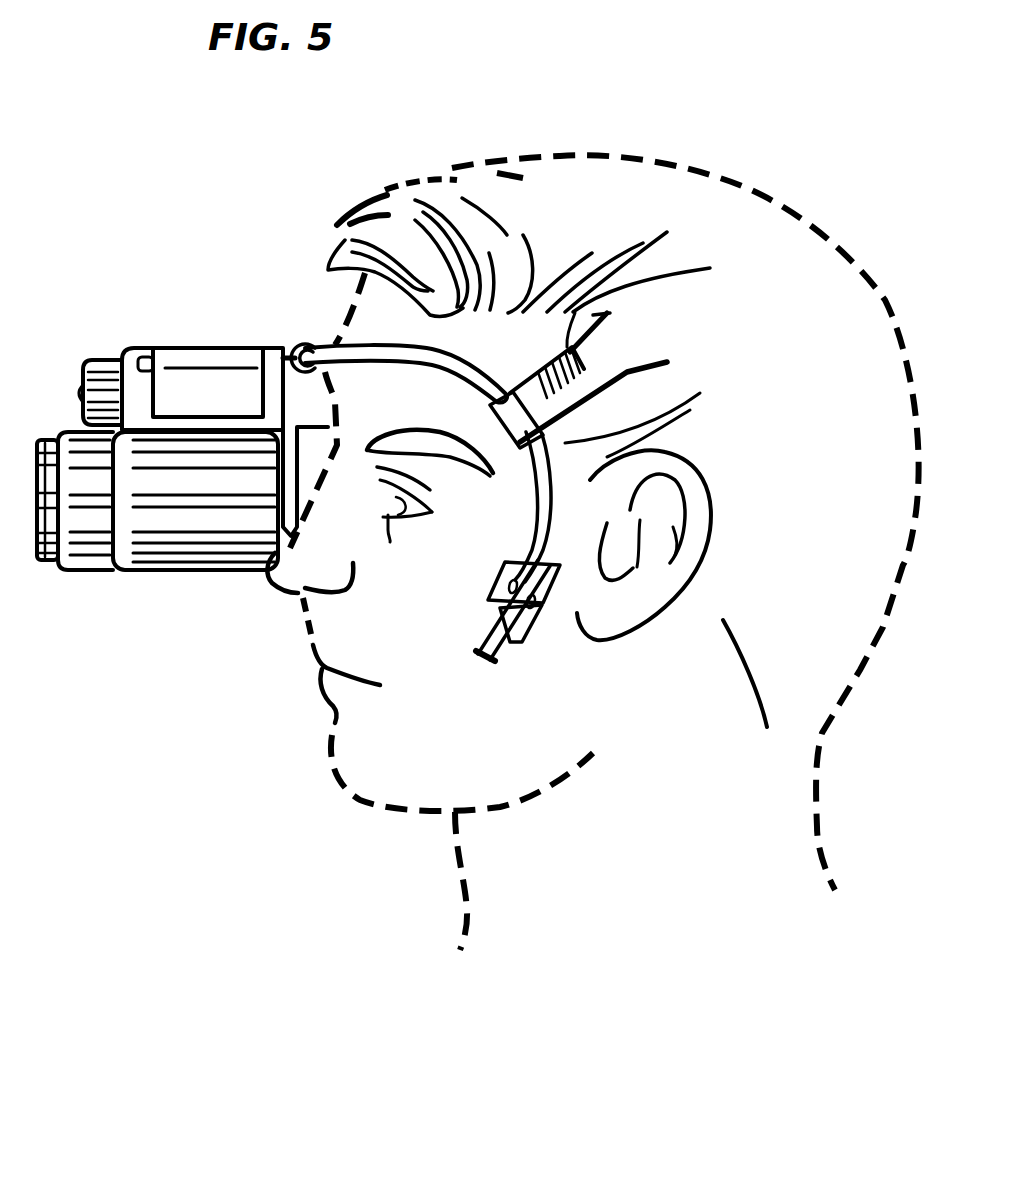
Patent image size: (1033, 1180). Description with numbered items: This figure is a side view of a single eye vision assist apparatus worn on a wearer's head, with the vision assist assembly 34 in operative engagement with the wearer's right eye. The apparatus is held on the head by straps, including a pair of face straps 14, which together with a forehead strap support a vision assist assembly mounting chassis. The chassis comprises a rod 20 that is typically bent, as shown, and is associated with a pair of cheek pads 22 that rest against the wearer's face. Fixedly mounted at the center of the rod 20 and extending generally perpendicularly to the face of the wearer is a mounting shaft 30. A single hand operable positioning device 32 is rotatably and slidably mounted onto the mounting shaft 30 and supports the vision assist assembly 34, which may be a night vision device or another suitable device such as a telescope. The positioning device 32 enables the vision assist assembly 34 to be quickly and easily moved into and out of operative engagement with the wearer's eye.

The face straps 14 is at (593, 363).
The rod 20 is at (478, 355).
The cheek pads 22 is at (528, 623).
The mounting shaft 30 is at (283, 342).
The single hand operable positioning device 32 is at (195, 357).
The vision assist assembly 34 is at (140, 572).